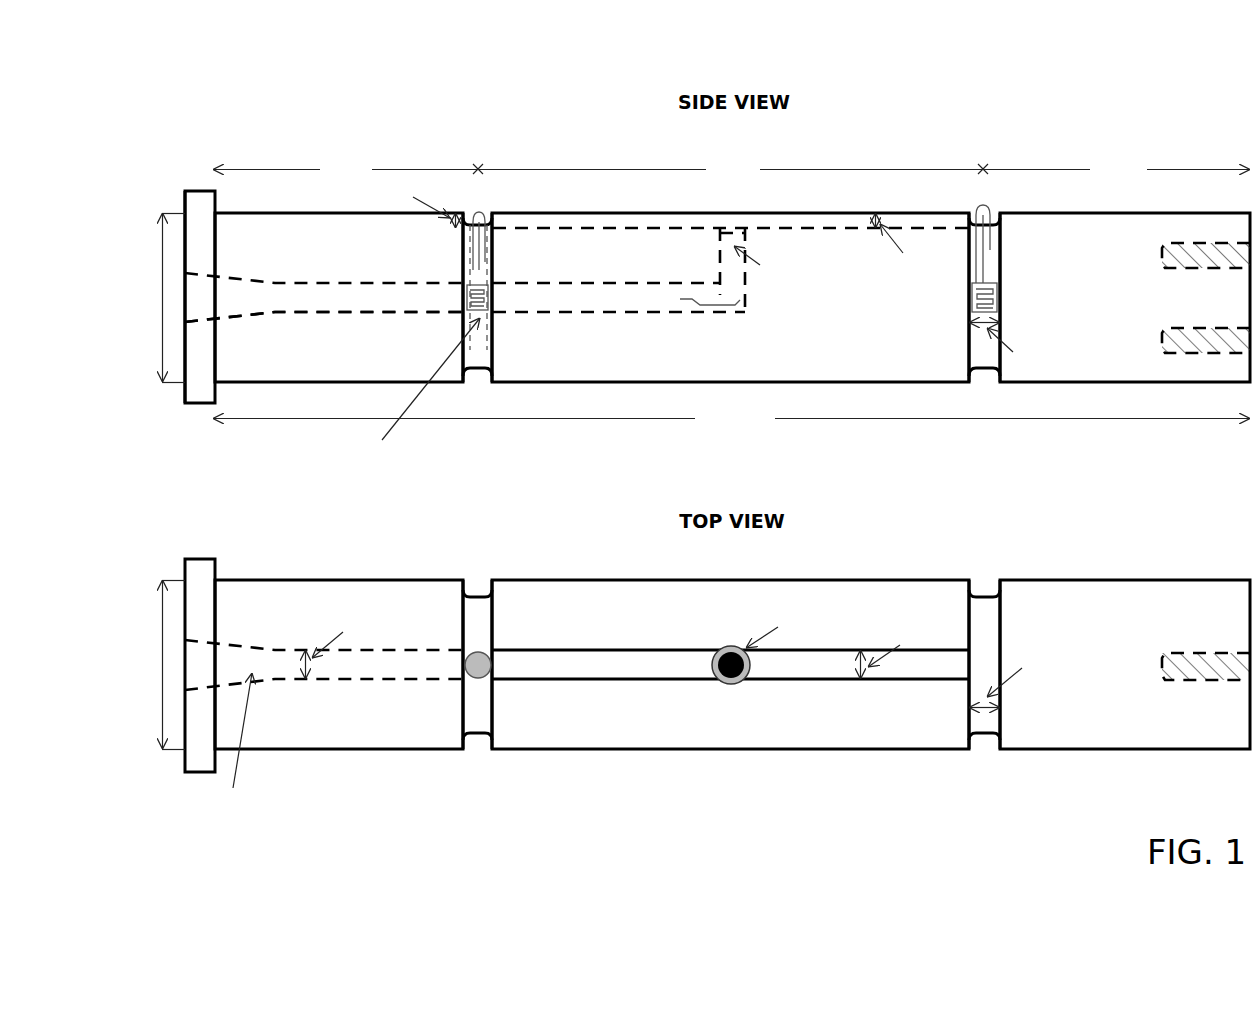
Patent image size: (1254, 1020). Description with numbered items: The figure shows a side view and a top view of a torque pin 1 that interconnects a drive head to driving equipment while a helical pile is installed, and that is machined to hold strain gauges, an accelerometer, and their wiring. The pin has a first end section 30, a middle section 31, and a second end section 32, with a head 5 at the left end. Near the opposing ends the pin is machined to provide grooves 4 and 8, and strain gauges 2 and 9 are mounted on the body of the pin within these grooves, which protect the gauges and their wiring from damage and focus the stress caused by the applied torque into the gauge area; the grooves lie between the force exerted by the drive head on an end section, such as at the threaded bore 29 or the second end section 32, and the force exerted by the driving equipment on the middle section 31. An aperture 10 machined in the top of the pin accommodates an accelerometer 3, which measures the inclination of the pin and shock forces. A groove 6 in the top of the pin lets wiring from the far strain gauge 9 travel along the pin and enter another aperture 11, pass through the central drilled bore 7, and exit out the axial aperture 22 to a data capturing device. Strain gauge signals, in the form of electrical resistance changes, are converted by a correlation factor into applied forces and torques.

The torque pin 1 is at (693, 460).
The strain gauge 2 is at (490, 298).
The accelerometer 3 is at (735, 285).
The groove 4 is at (990, 350).
The head 5 is at (203, 212).
The groove 6 is at (680, 221).
The central drilled bore 7 is at (407, 297).
The groove 8 is at (483, 275).
The strain gauge 9 is at (1000, 298).
The aperture 10 is at (718, 648).
The aperture 11 is at (480, 665).
The axial aperture 22 is at (180, 293).
The threaded bore 29 is at (1230, 670).
The first end section 30 is at (283, 258).
The middle section 31 is at (832, 245).
The second end section 32 is at (1102, 245).